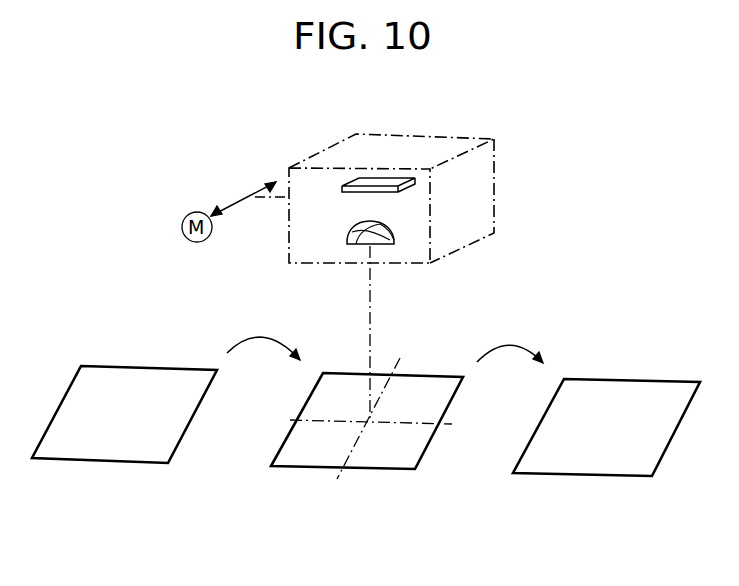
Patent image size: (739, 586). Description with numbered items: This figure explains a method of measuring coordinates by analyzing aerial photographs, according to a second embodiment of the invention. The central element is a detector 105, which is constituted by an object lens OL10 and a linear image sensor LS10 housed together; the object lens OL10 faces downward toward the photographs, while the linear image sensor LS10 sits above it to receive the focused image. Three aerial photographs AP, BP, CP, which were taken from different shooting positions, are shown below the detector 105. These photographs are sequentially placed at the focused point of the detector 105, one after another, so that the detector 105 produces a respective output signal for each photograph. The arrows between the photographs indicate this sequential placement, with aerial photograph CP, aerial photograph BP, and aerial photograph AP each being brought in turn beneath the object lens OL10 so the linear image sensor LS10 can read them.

The detector 105 is at (494, 175).
The linear image sensor LS10 is at (386, 184).
The object lens OL10 is at (380, 241).
The aerial photograph CP is at (115, 465).
The aerial photograph BP is at (362, 470).
The aerial photograph AP is at (580, 476).